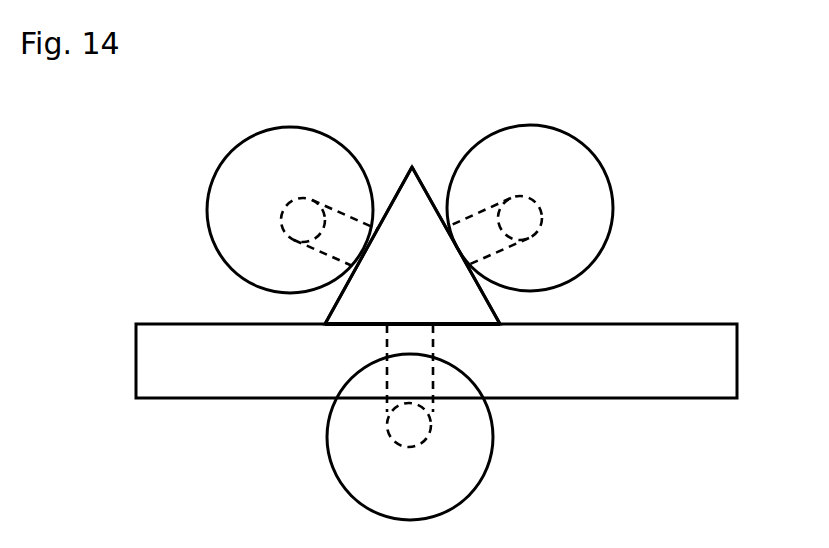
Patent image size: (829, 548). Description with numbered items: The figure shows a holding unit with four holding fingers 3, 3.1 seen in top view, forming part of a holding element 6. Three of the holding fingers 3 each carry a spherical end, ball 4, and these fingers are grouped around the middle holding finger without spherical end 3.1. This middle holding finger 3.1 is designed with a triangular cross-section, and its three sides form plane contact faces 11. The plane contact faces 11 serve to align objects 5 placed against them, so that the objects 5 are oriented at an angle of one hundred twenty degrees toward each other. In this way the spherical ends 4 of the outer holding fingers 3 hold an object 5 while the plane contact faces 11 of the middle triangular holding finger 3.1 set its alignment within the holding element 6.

The holding finger 3 is at (480, 237).
The holding finger without spherical end 3.1 is at (407, 285).
The spherical end, ball 4 is at (282, 165).
The object 5 is at (637, 355).
The holding element 6 is at (155, 188).
The plane contact face 11 is at (398, 192).